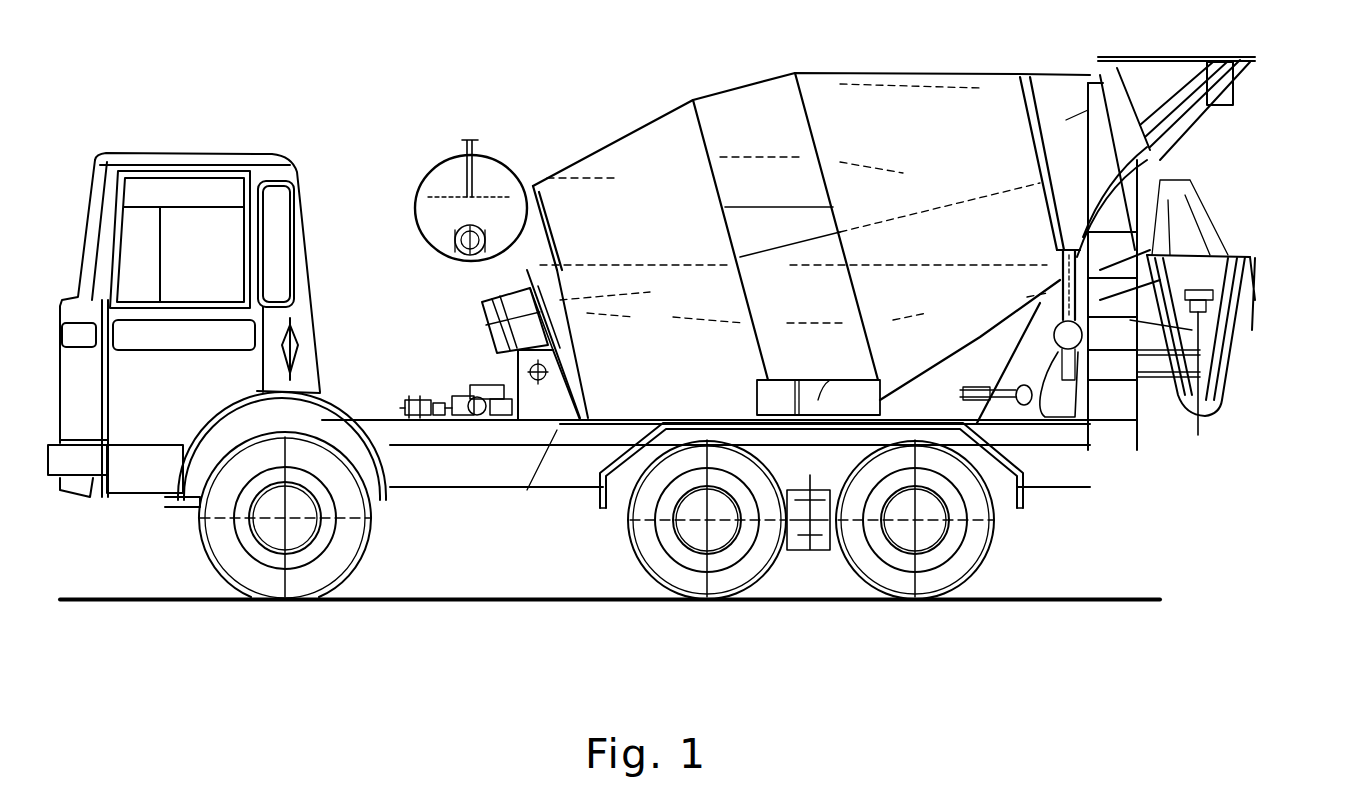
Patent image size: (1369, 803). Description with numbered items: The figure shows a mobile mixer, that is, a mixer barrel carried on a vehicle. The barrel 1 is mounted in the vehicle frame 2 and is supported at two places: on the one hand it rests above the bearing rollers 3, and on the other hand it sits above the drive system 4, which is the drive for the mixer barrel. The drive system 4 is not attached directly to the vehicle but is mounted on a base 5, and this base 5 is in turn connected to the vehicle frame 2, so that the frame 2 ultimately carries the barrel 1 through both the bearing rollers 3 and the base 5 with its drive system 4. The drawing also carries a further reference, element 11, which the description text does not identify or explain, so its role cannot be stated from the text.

The barrel 1 is at (730, 107).
The vehicle frame 2 is at (465, 467).
The bearing rollers 3 is at (1090, 247).
The drive system 4 is at (492, 288).
The base 5 is at (555, 393).
The water tank 11 is at (487, 177).